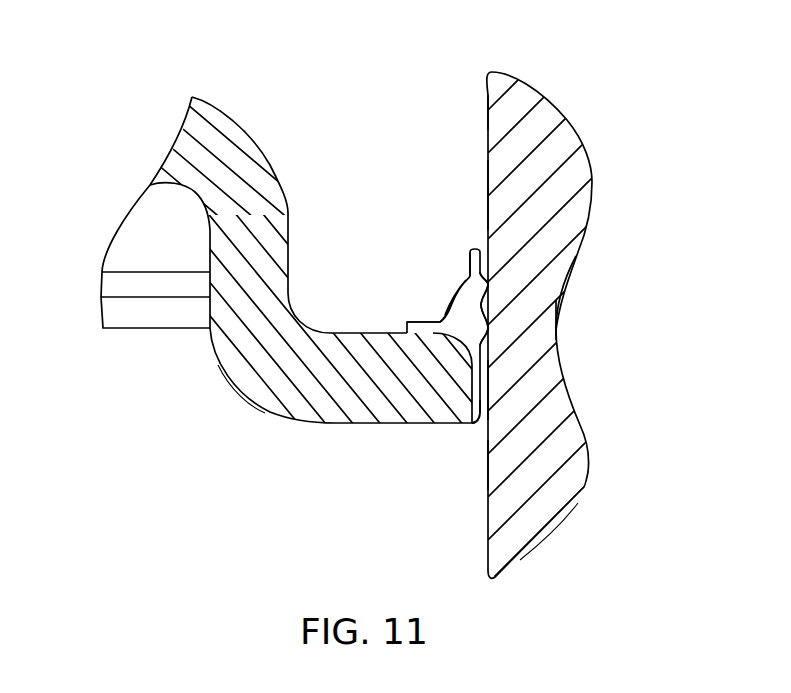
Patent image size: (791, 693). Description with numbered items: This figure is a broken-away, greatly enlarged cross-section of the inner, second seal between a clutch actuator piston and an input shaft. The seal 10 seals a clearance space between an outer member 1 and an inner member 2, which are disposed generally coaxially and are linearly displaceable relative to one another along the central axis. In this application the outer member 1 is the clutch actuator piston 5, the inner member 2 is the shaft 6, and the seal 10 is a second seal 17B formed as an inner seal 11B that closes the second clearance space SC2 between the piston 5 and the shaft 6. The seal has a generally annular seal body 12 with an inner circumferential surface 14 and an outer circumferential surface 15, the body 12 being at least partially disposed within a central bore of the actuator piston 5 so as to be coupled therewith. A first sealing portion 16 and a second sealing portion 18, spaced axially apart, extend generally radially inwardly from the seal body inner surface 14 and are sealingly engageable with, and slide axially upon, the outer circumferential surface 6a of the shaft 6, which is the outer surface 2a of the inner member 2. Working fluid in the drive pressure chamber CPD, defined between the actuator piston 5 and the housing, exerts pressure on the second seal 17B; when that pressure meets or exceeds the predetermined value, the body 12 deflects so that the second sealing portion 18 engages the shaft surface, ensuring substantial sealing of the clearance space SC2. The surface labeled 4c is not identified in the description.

The outer member 1 is at (352, 212).
The inner member 2 is at (466, 528).
The outer surface of inner member 2a is at (485, 192).
The outer surface of seal member 4c is at (484, 430).
The clutch actuator piston 5 is at (248, 150).
The shaft 6 is at (541, 115).
The outer circumferential surface of shaft 6a is at (488, 462).
The seal 10 is at (537, 318).
The inner seal 11B is at (431, 297).
The seal body 12 is at (458, 294).
The inner circumferential surface 14 is at (490, 290).
The outer circumferential surface 15 is at (447, 308).
The first sealing portion 16 is at (556, 262).
The second seal 17B is at (468, 276).
The second sealing portion 18 is at (492, 334).
The drive pressure chamber CPD is at (412, 103).
The second clearance space SC2 is at (490, 396).